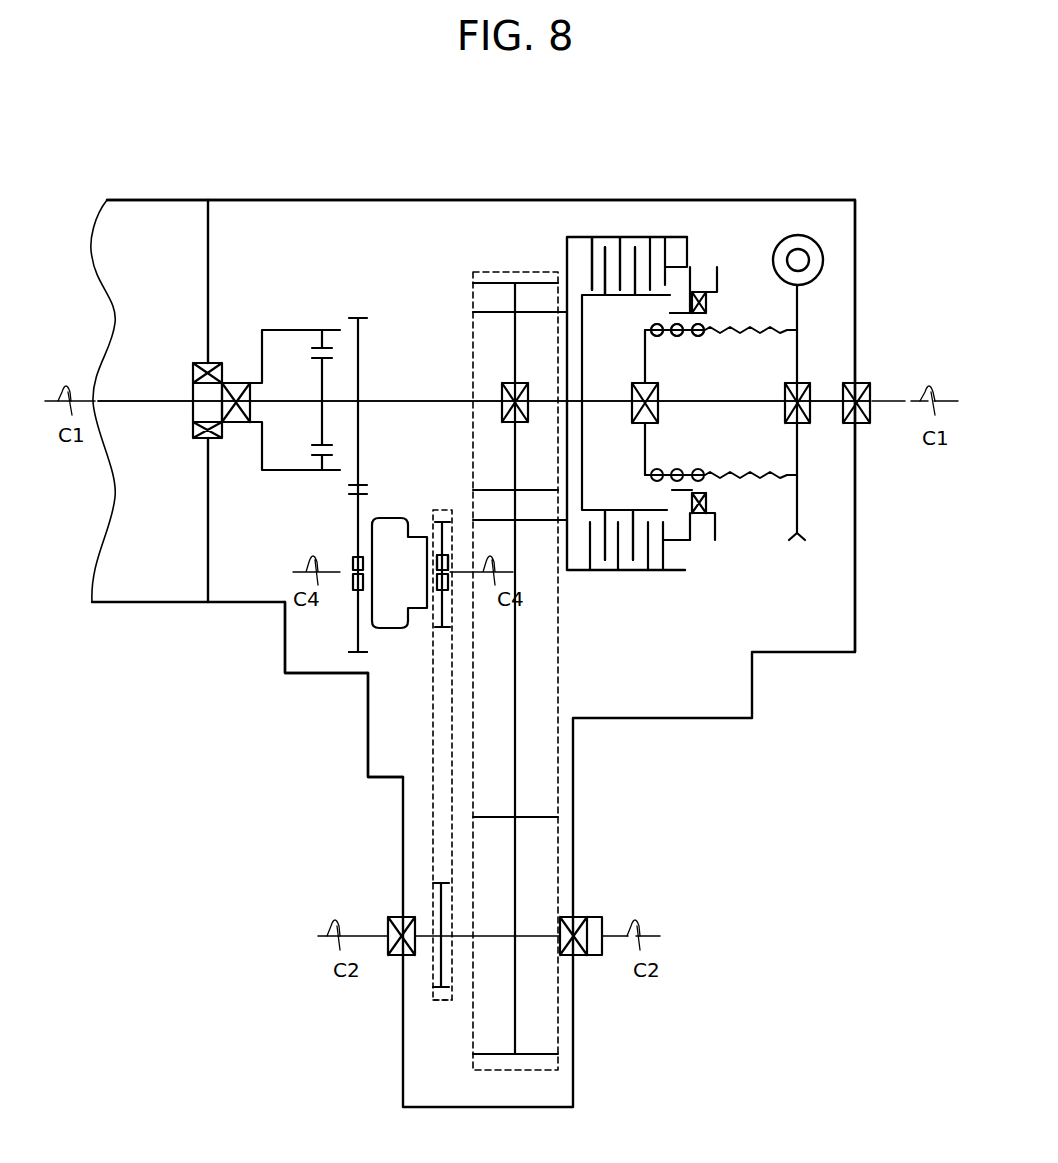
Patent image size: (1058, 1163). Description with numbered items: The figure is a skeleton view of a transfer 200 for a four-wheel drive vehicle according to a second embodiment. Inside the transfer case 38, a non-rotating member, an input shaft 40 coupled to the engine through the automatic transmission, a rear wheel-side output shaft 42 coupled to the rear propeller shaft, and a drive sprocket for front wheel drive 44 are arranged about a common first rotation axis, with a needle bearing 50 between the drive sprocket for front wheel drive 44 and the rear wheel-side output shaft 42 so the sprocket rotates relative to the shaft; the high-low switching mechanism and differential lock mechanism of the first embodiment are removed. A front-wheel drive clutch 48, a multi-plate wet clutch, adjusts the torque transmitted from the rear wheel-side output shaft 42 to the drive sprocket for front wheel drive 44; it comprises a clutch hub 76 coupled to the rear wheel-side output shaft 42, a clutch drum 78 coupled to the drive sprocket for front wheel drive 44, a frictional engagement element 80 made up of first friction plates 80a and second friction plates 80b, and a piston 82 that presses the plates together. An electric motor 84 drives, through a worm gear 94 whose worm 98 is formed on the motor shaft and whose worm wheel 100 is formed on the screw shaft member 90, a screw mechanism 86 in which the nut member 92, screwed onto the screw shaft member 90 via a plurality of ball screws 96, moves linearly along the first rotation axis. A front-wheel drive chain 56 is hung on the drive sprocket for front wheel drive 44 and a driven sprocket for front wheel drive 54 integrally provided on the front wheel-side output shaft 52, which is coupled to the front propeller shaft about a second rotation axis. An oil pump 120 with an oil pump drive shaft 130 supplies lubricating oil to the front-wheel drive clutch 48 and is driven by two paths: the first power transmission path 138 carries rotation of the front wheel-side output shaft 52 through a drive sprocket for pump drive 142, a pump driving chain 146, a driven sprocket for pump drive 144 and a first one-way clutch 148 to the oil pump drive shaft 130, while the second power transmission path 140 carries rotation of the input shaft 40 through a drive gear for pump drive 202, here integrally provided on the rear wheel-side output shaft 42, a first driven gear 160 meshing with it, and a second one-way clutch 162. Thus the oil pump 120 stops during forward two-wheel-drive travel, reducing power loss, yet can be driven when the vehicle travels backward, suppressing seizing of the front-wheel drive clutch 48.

The transfer case 38 is at (170, 200).
The input shaft 40 is at (133, 401).
The rear wheel-side output shaft 42 is at (423, 401).
The drive sprocket for front wheel drive 44 is at (500, 276).
The front-wheel drive clutch 48 is at (598, 234).
The needle bearing 50 is at (528, 383).
The front wheel-side output shaft 52 is at (488, 940).
The driven sprocket for front wheel drive 54 is at (497, 816).
The front-wheel drive chain 56 is at (560, 676).
The clutch hub 76 is at (604, 300).
The clutch drum 78 is at (645, 237).
The frictional engagement element 80 is at (674, 257).
The first friction plates 80a is at (590, 270).
The second friction plates 80b is at (607, 250).
The piston 82 is at (683, 542).
The electric motor 84 is at (803, 250).
The screw mechanism 86 is at (712, 332).
The screw shaft member 90 is at (748, 478).
The nut member 92 is at (716, 530).
The worm gear 94 is at (830, 261).
The ball screws 96 is at (677, 338).
The worm 98 is at (790, 262).
The worm wheel 100 is at (800, 353).
The oil pump 120 is at (397, 518).
The oil pump drive shaft 130 is at (449, 561).
The first power transmission path 138 is at (437, 1006).
The second power transmission path 140 is at (340, 626).
The drive sprocket for pump drive 142 is at (440, 883).
The driven sprocket for pump drive 144 is at (443, 510).
The pump driving chain 146 is at (432, 724).
The first one-way clutch 148 is at (449, 586).
The first driven gear 160 is at (360, 655).
The second one-way clutch 162 is at (354, 558).
The transfer 200 is at (776, 160).
The drive gear for pump drive 202 is at (357, 318).